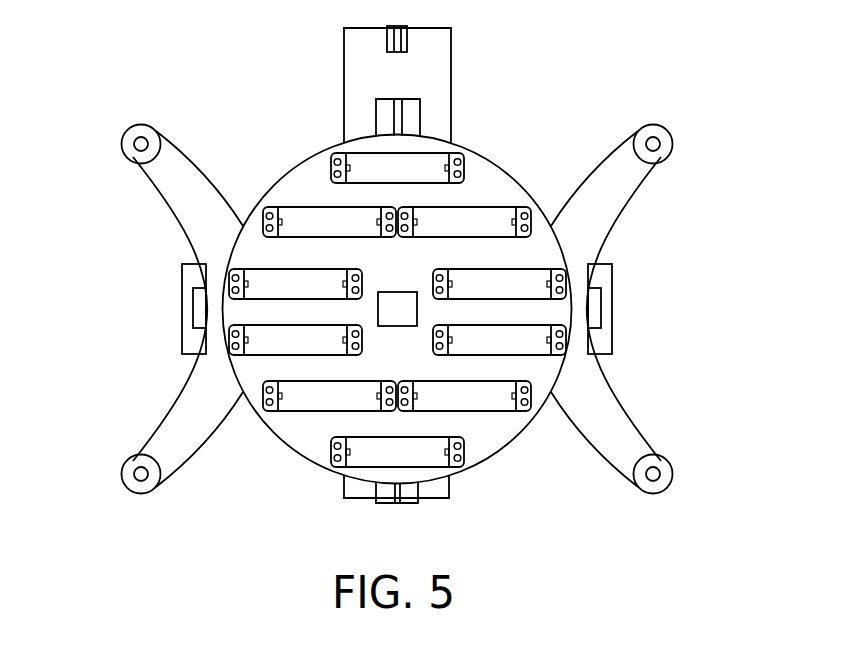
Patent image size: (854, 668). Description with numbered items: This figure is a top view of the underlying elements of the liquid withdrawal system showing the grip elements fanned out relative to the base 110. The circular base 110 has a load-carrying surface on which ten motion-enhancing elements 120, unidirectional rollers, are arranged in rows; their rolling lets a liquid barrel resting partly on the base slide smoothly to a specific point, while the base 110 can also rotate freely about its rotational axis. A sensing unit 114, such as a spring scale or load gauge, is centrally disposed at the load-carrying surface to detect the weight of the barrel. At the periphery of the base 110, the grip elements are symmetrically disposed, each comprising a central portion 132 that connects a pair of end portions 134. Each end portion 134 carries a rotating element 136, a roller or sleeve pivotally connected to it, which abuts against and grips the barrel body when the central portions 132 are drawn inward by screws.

The base 110 is at (297, 164).
The sensing unit 114 is at (399, 303).
The motion-enhancing element 120 is at (310, 398).
The central portion 132 is at (215, 308).
The end portion 134 is at (165, 175).
The rotating element 136 is at (143, 457).